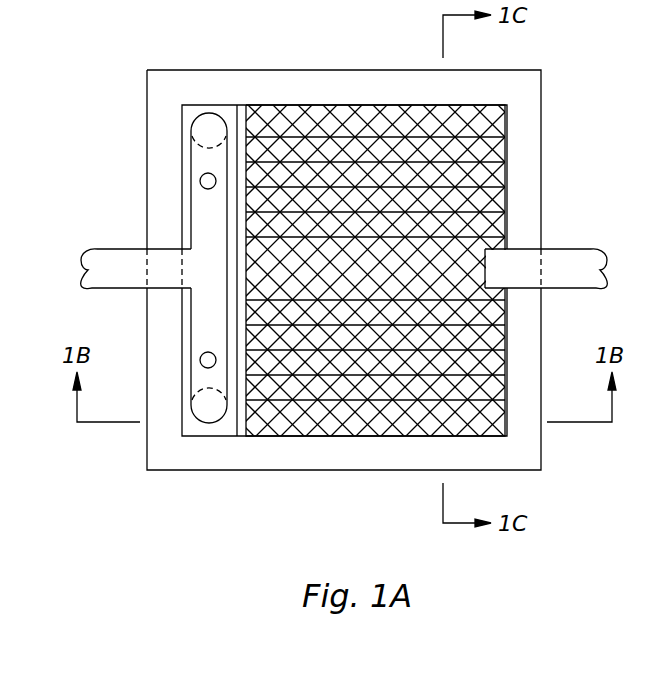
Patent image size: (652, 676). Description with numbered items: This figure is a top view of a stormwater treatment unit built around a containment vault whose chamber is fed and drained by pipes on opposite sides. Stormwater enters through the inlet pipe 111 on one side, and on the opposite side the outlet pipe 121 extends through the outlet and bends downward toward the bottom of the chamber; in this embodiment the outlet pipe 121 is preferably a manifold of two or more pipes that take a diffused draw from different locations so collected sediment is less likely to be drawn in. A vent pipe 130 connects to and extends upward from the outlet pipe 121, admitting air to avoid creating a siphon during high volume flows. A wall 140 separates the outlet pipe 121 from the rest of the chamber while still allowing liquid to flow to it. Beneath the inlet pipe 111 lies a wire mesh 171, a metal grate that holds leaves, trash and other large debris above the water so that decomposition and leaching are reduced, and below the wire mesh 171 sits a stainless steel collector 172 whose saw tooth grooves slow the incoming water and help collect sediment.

The inlet pipe 111 is at (578, 249).
The outlet pipe 121 is at (117, 249).
The vent pipe 130 is at (200, 181).
The wall 140 is at (248, 272).
The wire mesh 171 is at (332, 437).
The collector 172 is at (417, 134).